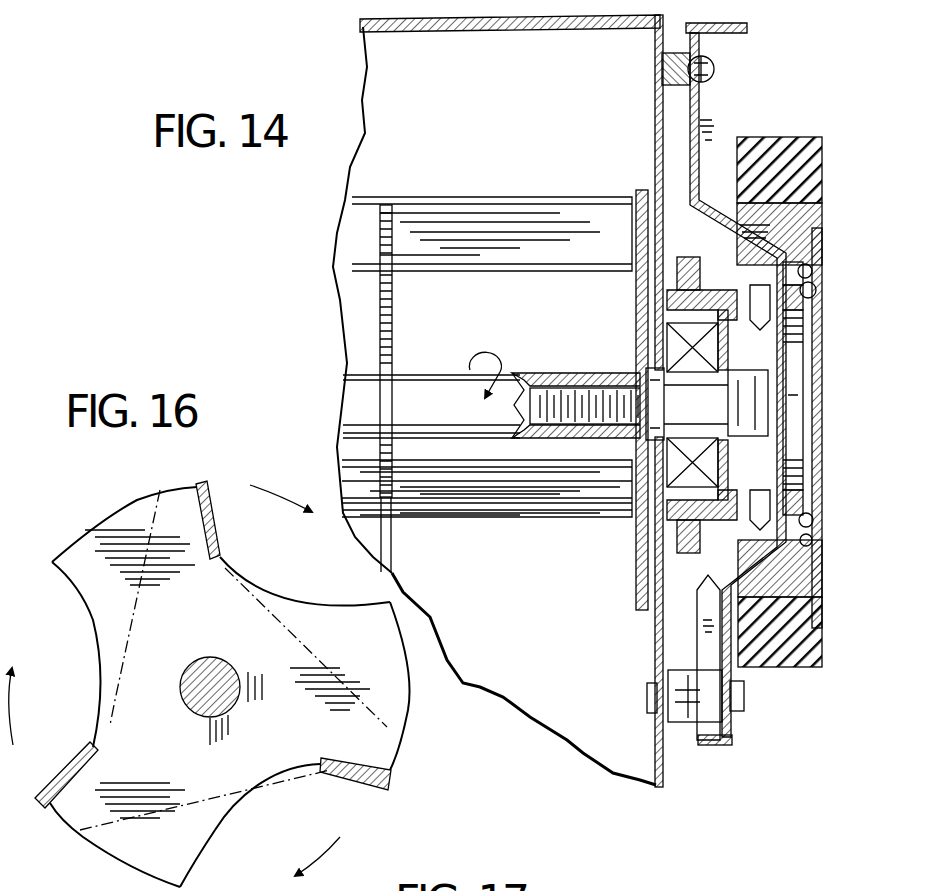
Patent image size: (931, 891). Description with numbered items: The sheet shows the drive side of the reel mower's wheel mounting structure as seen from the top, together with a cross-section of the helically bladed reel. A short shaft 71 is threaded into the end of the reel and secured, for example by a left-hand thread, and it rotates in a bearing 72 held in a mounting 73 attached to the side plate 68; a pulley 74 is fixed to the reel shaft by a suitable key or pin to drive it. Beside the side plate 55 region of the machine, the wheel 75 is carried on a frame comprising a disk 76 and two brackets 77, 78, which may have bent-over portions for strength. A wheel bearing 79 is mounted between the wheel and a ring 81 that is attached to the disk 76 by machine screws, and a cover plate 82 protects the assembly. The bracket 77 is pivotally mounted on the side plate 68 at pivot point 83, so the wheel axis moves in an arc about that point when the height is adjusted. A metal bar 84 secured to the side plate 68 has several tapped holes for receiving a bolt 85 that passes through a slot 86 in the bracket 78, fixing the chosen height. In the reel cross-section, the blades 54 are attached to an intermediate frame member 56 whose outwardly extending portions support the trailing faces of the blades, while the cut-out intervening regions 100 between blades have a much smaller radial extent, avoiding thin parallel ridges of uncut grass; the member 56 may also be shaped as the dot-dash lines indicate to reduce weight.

In FIG. 14, the blades 54 is at (472, 217).
In FIG. 16, the blades 54 is at (218, 517).
In FIG. 14, the mounting plate 55 is at (640, 586).
In FIG. 14, the intermediate frame member 56 is at (390, 350).
In FIG. 16, the intermediate frame member 56 is at (80, 548).
In FIG. 14, the side plate 68 is at (654, 168).
In FIG. 14, the short shaft 71 is at (692, 392).
In FIG. 14, the bearing 72 is at (667, 333).
In FIG. 14, the mounting 73 is at (672, 306).
In FIG. 14, the pulley 74 is at (771, 382).
In FIG. 14, the wheel 75 is at (787, 150).
In FIG. 14, the disk 76 is at (793, 351).
In FIG. 14, the bracket 77 is at (697, 648).
In FIG. 14, the bracket 78 is at (706, 126).
In FIG. 14, the wheel bearing 79 is at (809, 283).
In FIG. 14, the ring 81 is at (809, 304).
In FIG. 14, the cover plate 82 is at (823, 446).
In FIG. 14, the pivot point 83 is at (744, 696).
In FIG. 14, the metal bar 84 is at (676, 72).
In FIG. 14, the bolt 85 is at (714, 64).
In FIG. 14, the slot 86 is at (706, 96).
In FIG. 16, the intervening regions 100 is at (78, 682).